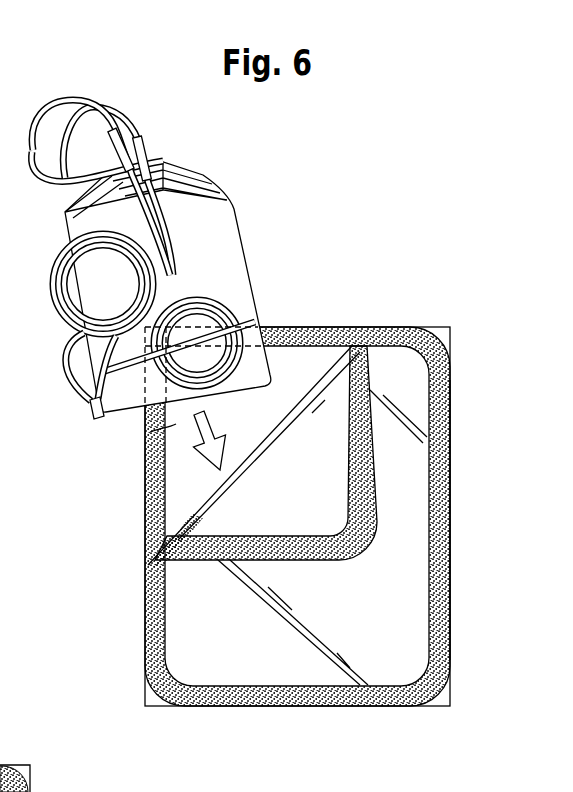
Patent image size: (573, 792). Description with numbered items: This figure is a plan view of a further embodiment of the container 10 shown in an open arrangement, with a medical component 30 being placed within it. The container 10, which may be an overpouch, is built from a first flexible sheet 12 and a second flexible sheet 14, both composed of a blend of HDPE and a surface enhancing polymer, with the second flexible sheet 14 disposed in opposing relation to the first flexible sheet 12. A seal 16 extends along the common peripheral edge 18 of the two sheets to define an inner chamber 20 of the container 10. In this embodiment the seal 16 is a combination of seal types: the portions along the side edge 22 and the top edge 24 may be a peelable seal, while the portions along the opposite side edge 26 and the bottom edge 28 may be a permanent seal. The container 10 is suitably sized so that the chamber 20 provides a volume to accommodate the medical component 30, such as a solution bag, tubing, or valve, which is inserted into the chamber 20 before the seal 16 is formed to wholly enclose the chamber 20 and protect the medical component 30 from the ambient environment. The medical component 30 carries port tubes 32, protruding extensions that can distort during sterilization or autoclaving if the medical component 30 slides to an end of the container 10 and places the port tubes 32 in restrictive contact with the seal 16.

The container 10 is at (413, 315).
The first flexible sheet 12 is at (427, 493).
The second flexible sheet 14 is at (150, 432).
The seal 16 is at (355, 345).
The common peripheral edge 18 is at (0, 80).
The inner chamber 20 is at (185, 492).
The side edge 22 is at (147, 565).
The top edge 24 is at (258, 326).
The side edge 26 is at (452, 538).
The bottom edge 28 is at (320, 707).
The medical component 30 is at (224, 158).
The port tubes 32 is at (117, 124).